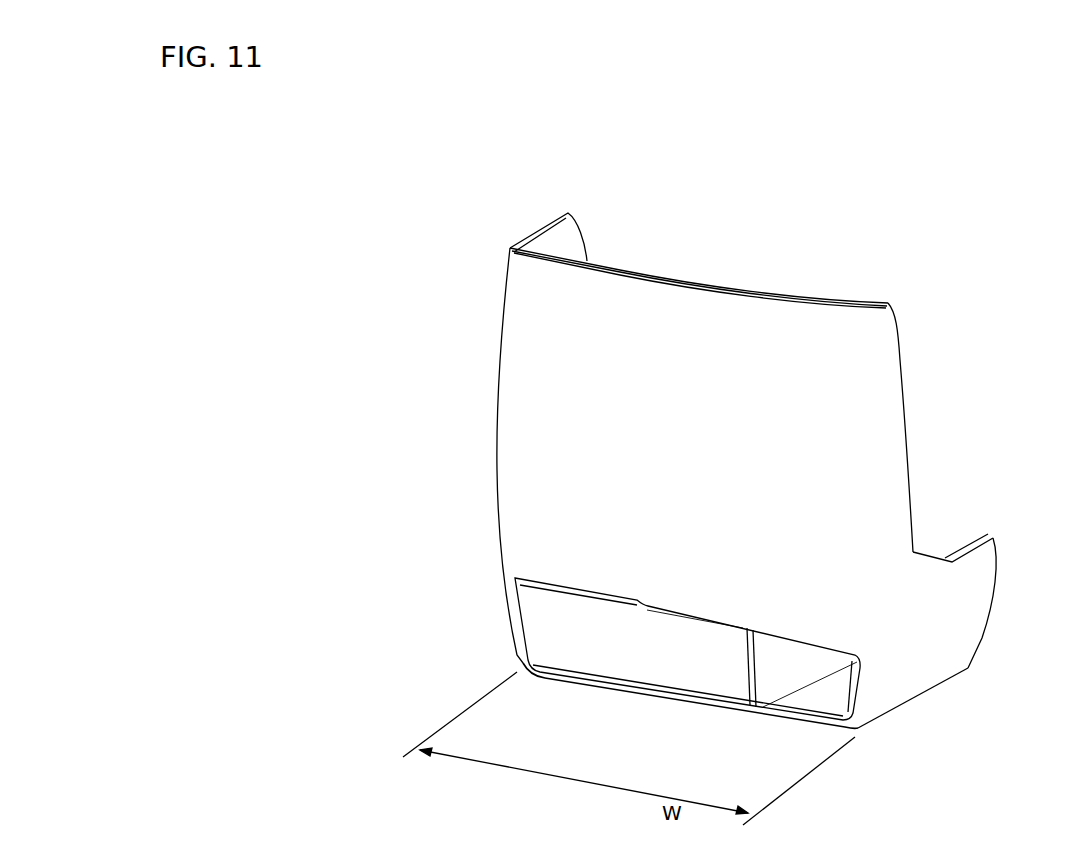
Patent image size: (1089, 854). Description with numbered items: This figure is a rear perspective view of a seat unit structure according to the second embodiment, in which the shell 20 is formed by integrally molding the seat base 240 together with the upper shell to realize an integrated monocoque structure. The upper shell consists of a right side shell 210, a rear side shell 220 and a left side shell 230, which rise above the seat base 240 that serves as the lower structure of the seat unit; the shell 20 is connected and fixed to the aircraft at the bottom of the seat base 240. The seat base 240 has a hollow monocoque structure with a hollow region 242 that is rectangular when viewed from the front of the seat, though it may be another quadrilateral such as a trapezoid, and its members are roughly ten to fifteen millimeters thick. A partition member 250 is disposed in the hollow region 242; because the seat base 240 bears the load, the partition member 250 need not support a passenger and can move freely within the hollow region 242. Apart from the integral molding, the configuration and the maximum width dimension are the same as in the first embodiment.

The shell 20 is at (872, 222).
The right side shell 210 is at (878, 395).
The rear side shell 220 is at (668, 280).
The left side shell 230 is at (533, 230).
The seat base 240 is at (917, 673).
The hollow region 242 is at (598, 650).
The partition member 250 is at (743, 700).